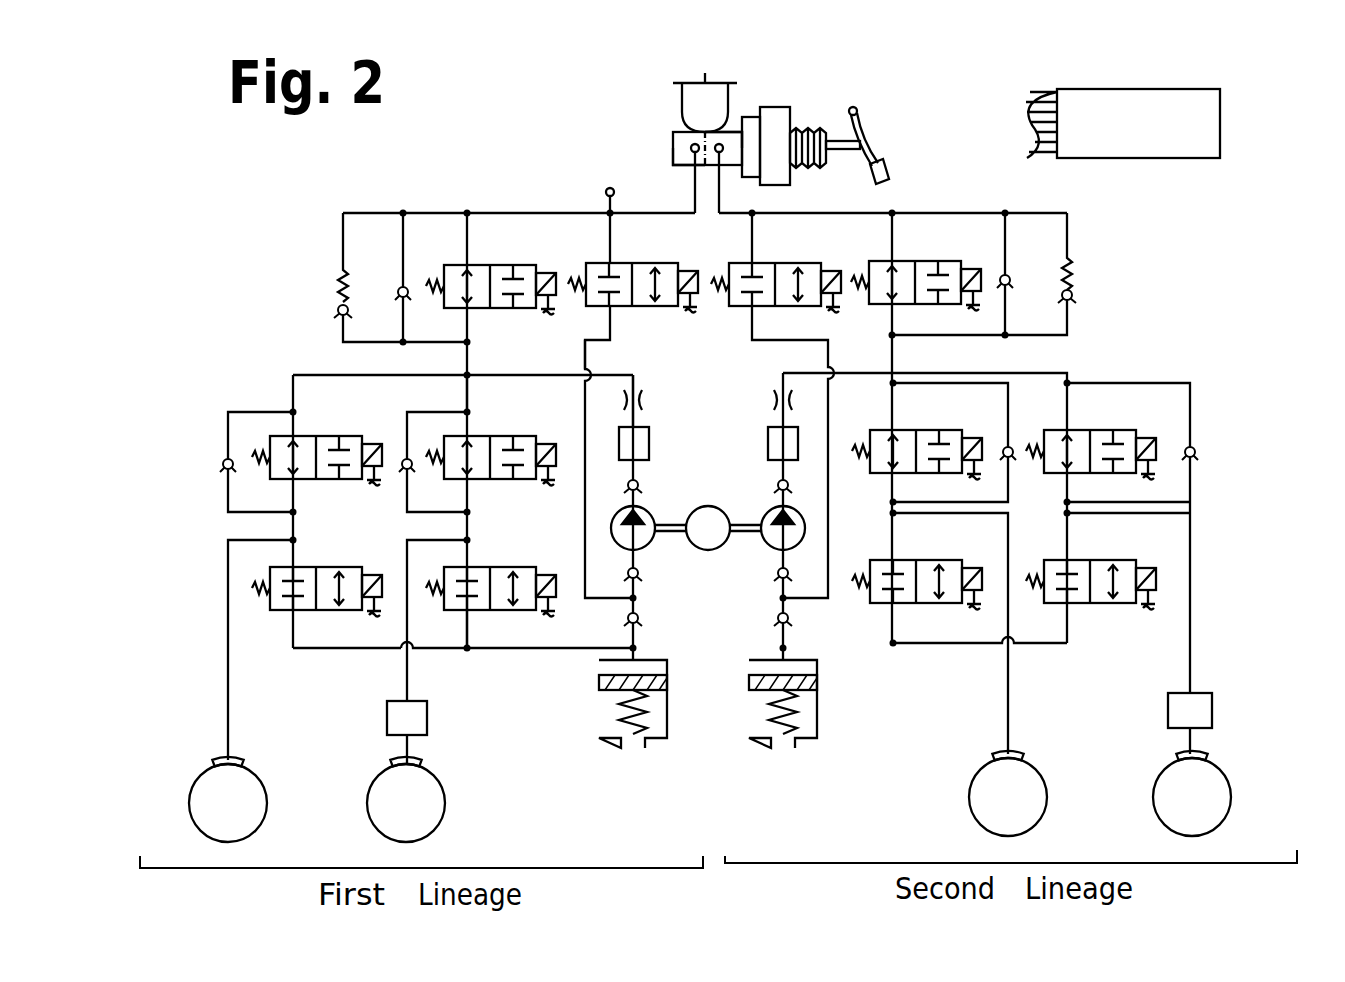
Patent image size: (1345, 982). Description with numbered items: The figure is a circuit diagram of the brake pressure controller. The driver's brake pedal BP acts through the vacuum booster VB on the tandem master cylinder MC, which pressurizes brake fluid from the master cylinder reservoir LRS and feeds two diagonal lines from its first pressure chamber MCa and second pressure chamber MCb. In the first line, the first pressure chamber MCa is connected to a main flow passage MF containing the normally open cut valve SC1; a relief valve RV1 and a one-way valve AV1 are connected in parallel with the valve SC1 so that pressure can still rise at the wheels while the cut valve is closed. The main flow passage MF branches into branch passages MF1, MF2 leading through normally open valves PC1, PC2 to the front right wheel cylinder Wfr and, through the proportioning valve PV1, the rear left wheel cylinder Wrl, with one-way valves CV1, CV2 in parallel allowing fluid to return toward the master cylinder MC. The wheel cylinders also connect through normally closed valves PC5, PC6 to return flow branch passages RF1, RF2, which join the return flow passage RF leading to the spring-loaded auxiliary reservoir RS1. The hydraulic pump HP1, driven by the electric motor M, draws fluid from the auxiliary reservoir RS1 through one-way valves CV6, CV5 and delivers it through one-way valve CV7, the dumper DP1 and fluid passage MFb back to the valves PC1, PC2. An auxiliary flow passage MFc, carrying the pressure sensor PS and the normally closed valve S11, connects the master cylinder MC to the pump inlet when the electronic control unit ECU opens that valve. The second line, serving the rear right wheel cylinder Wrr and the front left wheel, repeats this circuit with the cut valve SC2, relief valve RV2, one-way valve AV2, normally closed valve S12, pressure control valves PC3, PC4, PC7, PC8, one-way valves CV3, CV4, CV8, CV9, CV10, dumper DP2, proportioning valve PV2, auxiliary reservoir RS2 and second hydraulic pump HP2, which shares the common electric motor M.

The master cylinder reservoir LRS is at (683, 105).
The master cylinder MC is at (673, 148).
The first pressure chamber MCa is at (683, 175).
The second pressure chamber MCb is at (733, 140).
The vacuum booster VB is at (792, 175).
The brake pedal BP is at (880, 145).
The pressure sensor PS is at (606, 192).
The electronic control unit ECU is at (1123, 123).
The relief valve RV1 is at (340, 290).
The one-way valve AV1 is at (400, 290).
The open/close valve SC1 is at (490, 265).
The open/close valve S11 is at (633, 263).
The normally closed valve S12 is at (776, 263).
The normally open valve SC2 is at (917, 261).
The one-way valve AV2 is at (1008, 280).
The relief valve RV2 is at (1070, 295).
The main flow passage MF is at (467, 360).
The branch passage MF1 is at (292, 395).
The branch passage MF2 is at (470, 393).
The auxiliary flow passage MFc is at (588, 356).
The fluid passage MFb is at (636, 382).
The one-way valve CV1 is at (226, 460).
The one-way valve CV2 is at (403, 460).
The one-way valve CV3 is at (1010, 450).
The one-way valve CV4 is at (1190, 448).
The one-way valve CV5 is at (638, 621).
The one-way valve CV6 is at (637, 577).
The one-way valve CV7 is at (627, 485).
The one-way valve CV8 is at (789, 622).
The one-way valve CV9 is at (777, 573).
The one-way valve CV10 is at (779, 480).
The open/close valve PC1 is at (315, 436).
The open/close valve PC2 is at (492, 436).
The open/close valve PC3 is at (916, 430).
The open/close valve PC4 is at (1093, 430).
The open/close valve PC5 is at (315, 567).
The open/close valve PC6 is at (500, 555).
The open/close valve PC7 is at (916, 560).
The open/close valve PC8 is at (1093, 560).
The dumper DP1 is at (650, 432).
The dumper DP2 is at (765, 430).
The hydraulic pump HP1 is at (650, 512).
The second hydraulic pump HP2 is at (797, 549).
The electric motor M is at (708, 528).
The auxiliary reservoir RS1 is at (601, 688).
The auxiliary reservoir RS2 is at (817, 690).
The return flow passage RF is at (482, 652).
The return flow branch passage RF1 is at (320, 650).
The return flow branch passage RF2 is at (473, 623).
The proportioning valve PV1 is at (387, 718).
The proportioning valve PV2 is at (1212, 705).
The front right wheel cylinder Wfr is at (215, 765).
The rear left wheel cylinder Wrl is at (387, 763).
The rear right wheel cylinder Wrr is at (1215, 760).